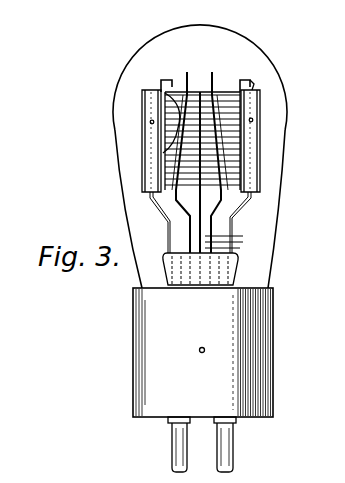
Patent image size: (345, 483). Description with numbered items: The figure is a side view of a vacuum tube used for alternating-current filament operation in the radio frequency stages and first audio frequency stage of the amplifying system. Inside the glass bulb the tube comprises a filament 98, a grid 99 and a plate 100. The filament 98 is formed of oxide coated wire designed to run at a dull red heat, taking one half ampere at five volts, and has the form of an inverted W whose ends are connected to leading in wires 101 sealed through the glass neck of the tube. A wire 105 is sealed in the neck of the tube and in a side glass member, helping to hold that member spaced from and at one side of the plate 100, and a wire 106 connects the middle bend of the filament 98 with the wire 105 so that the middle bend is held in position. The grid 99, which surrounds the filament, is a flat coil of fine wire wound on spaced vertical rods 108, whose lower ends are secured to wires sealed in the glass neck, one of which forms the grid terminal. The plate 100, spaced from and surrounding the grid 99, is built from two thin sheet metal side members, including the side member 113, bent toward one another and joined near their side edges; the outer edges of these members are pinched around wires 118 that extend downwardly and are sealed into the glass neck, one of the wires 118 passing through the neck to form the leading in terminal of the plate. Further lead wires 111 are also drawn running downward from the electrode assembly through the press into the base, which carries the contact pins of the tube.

The filament 98 is at (198, 96).
The support wire 99 is at (246, 86).
The bulb envelope 100 is at (140, 119).
The lead wires 101 is at (243, 242).
The base 105 is at (243, 247).
The plate 106 is at (238, 206).
The support hooks 108 is at (159, 82).
The lead-in wires 111 is at (232, 222).
The cathode 113 is at (165, 139).
The grid 118 is at (240, 206).